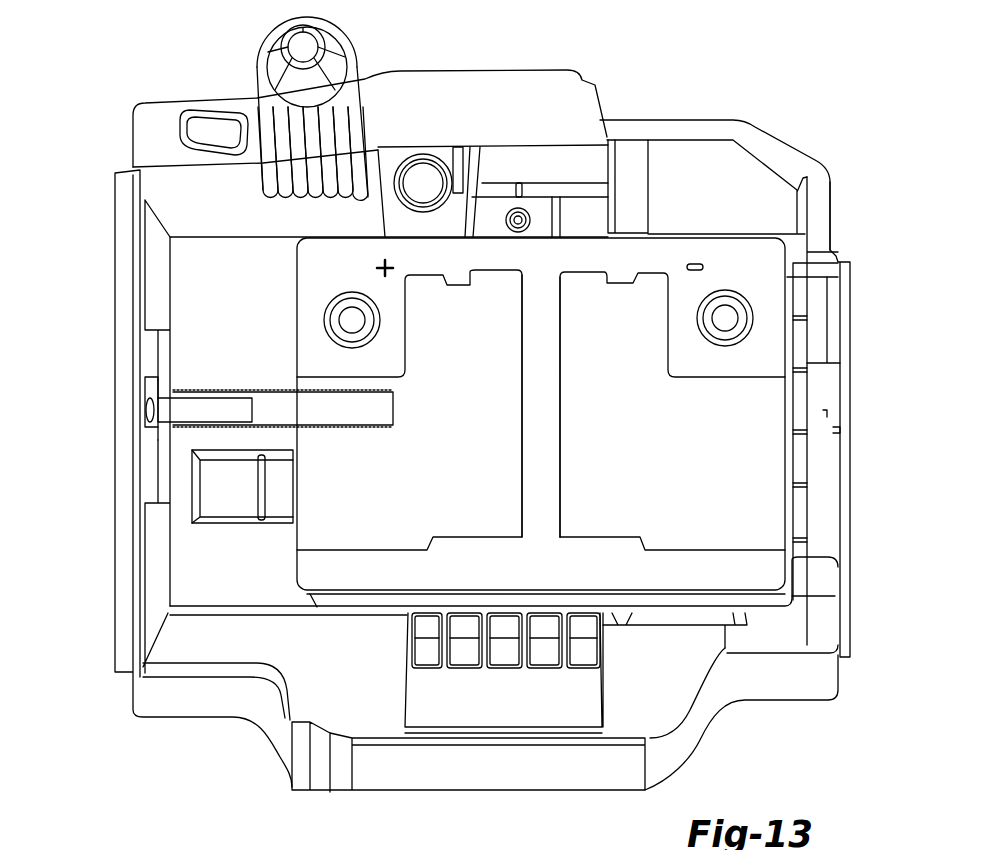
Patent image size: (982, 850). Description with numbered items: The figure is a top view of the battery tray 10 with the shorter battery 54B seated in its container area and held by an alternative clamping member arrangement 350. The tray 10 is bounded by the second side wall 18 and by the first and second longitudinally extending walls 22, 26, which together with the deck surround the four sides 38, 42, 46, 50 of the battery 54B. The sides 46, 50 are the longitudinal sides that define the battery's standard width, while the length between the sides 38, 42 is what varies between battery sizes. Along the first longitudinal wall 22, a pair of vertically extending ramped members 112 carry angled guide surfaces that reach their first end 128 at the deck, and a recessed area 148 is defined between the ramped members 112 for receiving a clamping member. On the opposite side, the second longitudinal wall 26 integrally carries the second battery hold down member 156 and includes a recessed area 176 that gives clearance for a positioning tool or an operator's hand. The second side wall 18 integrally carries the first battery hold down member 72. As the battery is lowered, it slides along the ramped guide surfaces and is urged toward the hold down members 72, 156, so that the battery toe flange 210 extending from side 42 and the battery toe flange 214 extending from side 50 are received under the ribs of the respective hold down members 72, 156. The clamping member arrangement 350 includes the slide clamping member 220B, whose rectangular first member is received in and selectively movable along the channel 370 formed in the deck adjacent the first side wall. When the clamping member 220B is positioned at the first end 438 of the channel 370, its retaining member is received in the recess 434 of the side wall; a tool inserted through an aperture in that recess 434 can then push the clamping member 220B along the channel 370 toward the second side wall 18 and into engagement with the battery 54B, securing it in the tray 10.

The battery tray 10 is at (743, 102).
The second side wall 18 is at (833, 612).
The first longitudinally extending wall 22 is at (607, 125).
The second longitudinally extending wall 26 is at (720, 660).
The battery side 38 is at (297, 282).
The battery side 42 is at (782, 348).
The battery longitudinal side 46 is at (552, 238).
The battery longitudinal side 50 is at (655, 590).
The battery 54B is at (546, 575).
The first battery hold down member 72 is at (800, 363).
The ramped members 112 is at (235, 197).
The first end 128 is at (198, 250).
The recessed area 148 is at (507, 168).
The second battery hold down member 156 is at (600, 670).
The recessed area 176 is at (347, 717).
The battery toe flange 210 is at (787, 295).
The battery toe flange 214 is at (380, 620).
The clamping member 220B is at (178, 408).
The clamping member arrangement 350 is at (192, 383).
The channel 370 is at (263, 432).
The recess 434 is at (152, 432).
The first end of channel 438 is at (162, 430).